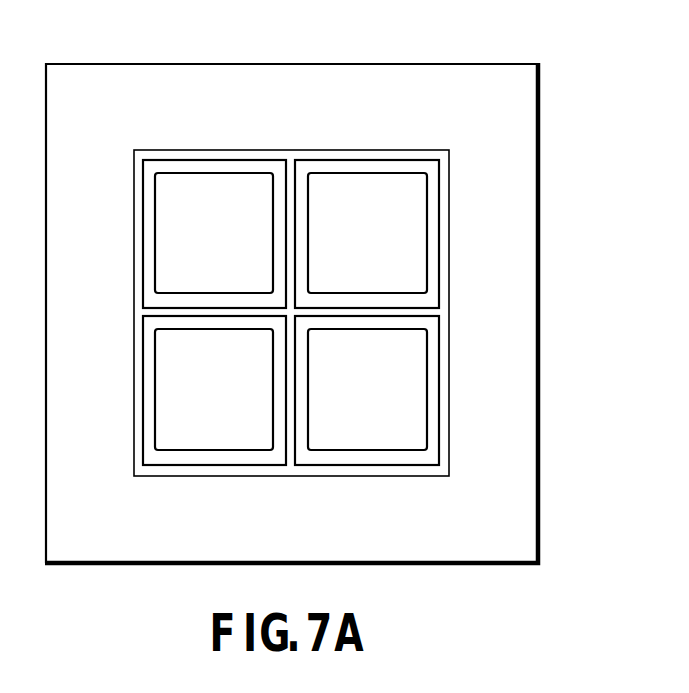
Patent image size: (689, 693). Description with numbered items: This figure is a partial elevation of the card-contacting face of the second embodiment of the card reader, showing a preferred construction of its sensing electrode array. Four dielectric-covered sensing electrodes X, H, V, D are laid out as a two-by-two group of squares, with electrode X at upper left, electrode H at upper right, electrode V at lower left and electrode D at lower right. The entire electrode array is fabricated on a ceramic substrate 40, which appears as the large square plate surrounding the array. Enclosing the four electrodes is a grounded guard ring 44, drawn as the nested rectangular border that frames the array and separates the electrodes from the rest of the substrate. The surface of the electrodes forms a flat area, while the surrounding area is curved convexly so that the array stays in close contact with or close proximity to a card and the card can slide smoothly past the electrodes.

The ceramic substrate 40 is at (473, 87).
The grounded guard ring 44 is at (362, 313).
The sensing electrode X is at (214, 233).
The sensing electrode H is at (367, 233).
The sensing electrode V is at (214, 389).
The sensing electrode D is at (367, 389).